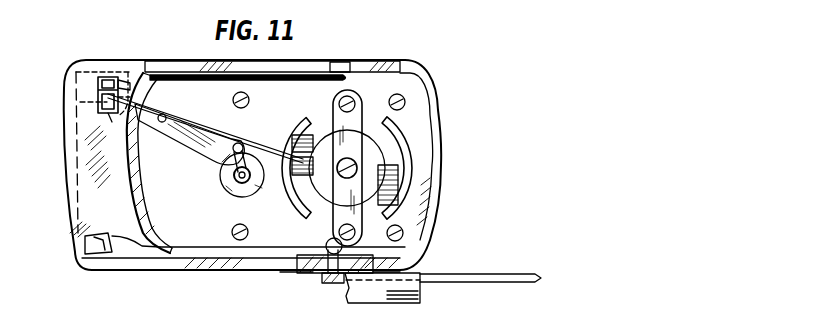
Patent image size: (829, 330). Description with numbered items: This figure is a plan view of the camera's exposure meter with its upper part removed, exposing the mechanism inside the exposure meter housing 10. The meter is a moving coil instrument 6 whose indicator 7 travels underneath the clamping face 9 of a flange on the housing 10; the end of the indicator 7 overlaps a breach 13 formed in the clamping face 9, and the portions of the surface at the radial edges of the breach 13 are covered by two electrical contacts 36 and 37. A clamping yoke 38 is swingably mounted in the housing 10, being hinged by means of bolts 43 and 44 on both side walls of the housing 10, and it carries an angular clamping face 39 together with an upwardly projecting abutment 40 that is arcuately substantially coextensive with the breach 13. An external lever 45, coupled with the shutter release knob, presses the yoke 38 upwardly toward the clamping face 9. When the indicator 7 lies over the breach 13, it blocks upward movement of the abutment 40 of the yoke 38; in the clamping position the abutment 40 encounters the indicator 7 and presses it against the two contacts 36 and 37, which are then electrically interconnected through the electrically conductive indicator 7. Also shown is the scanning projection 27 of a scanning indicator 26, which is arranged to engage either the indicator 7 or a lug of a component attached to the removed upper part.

The moving coil instrument 6 is at (378, 153).
The indicator 7 is at (230, 127).
The clamping surface 9 is at (67, 168).
The exposure meter housing 10 is at (72, 228).
The breach 13 is at (122, 82).
The scanning indicator 26 is at (188, 142).
The scanning projection 27 is at (161, 123).
The electrical contact 36 is at (97, 95).
The electrical contact 37 is at (122, 112).
The clamping yoke 38 is at (191, 78).
The angular clamping face 39 is at (100, 254).
The abutment 40 is at (110, 77).
The bolt 43 is at (340, 62).
The bolt 44 is at (322, 278).
The external lever 45 is at (472, 282).